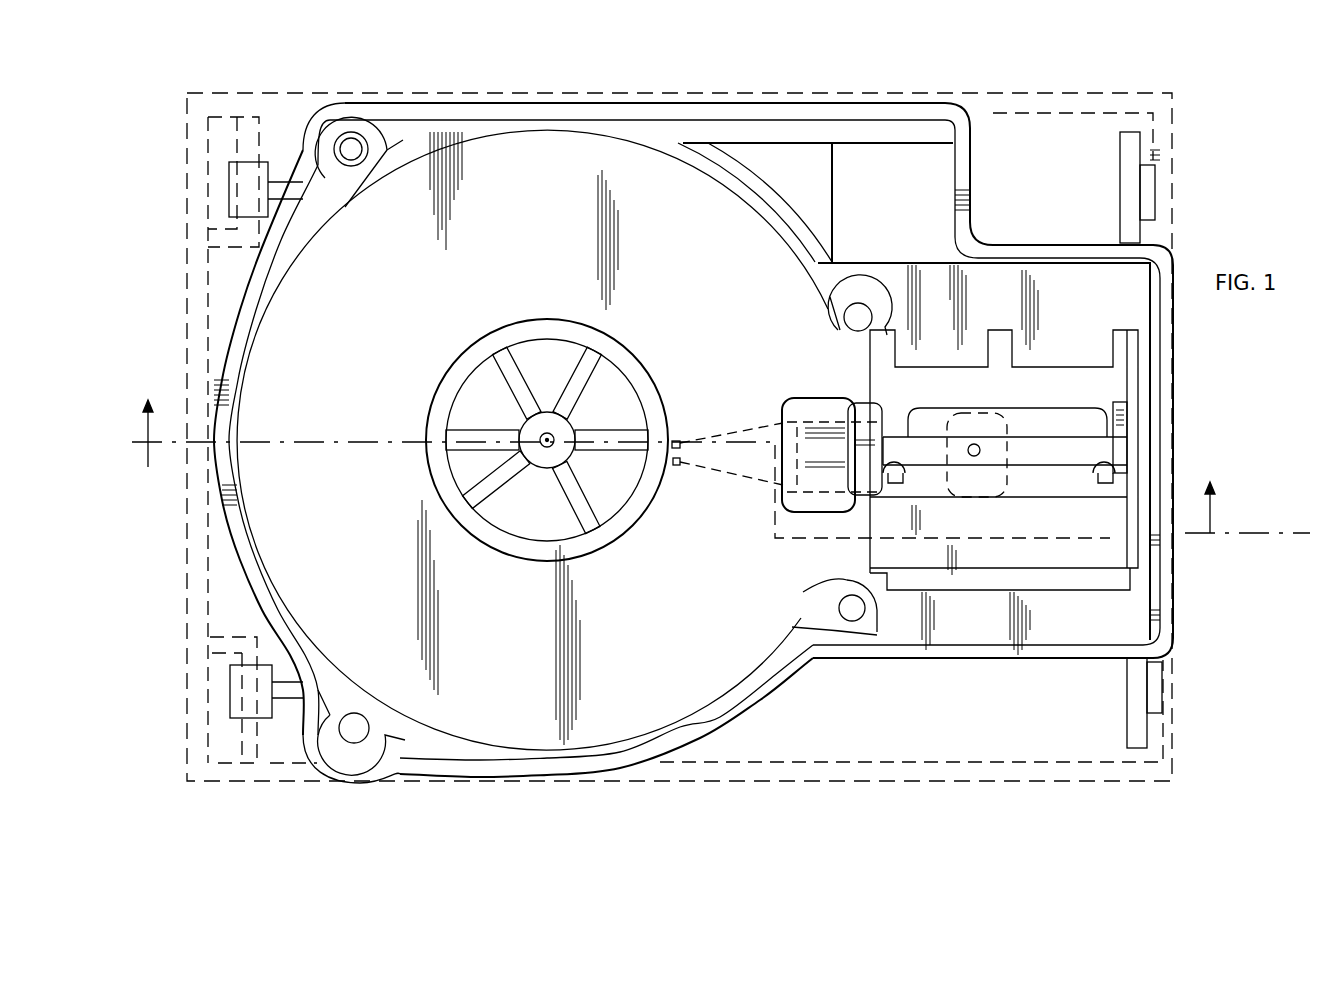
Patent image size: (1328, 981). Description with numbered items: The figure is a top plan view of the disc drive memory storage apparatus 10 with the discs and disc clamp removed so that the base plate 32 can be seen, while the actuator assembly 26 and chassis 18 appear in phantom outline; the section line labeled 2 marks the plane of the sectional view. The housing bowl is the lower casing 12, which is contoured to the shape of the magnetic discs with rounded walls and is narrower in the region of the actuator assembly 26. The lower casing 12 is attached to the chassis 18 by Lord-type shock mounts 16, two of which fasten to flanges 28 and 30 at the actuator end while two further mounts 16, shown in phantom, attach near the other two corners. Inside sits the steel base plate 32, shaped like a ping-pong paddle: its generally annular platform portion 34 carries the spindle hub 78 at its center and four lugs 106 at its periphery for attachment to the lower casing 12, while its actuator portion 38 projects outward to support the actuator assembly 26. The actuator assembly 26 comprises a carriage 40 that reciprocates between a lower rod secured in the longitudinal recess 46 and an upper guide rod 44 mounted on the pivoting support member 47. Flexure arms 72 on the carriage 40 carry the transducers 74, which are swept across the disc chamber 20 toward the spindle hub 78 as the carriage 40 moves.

The disc drive memory storage apparatus 10 is at (226, 76).
The lower casing 12 is at (887, 97).
The shock mounts 16 is at (246, 146).
The chassis 18 is at (1120, 782).
The fan chamber 20 is at (735, 365).
The actuator assembly 26 is at (1115, 553).
The flange 28 is at (1138, 730).
The flange 30 is at (1142, 143).
The base plate 32 is at (278, 539).
The platform portion 34 is at (547, 435).
The actuator portion 38 is at (1107, 580).
The carriage 40 is at (1003, 497).
The upper guide rod 44 is at (1103, 447).
The longitudinal recess 46 is at (832, 410).
The support member 47 is at (994, 402).
The flexure arms 72 is at (677, 436).
The transducers 74 is at (681, 463).
The spindle hub 78 is at (553, 527).
The lugs 106 is at (333, 148).
The section line 2- 2 is at (725, 456).